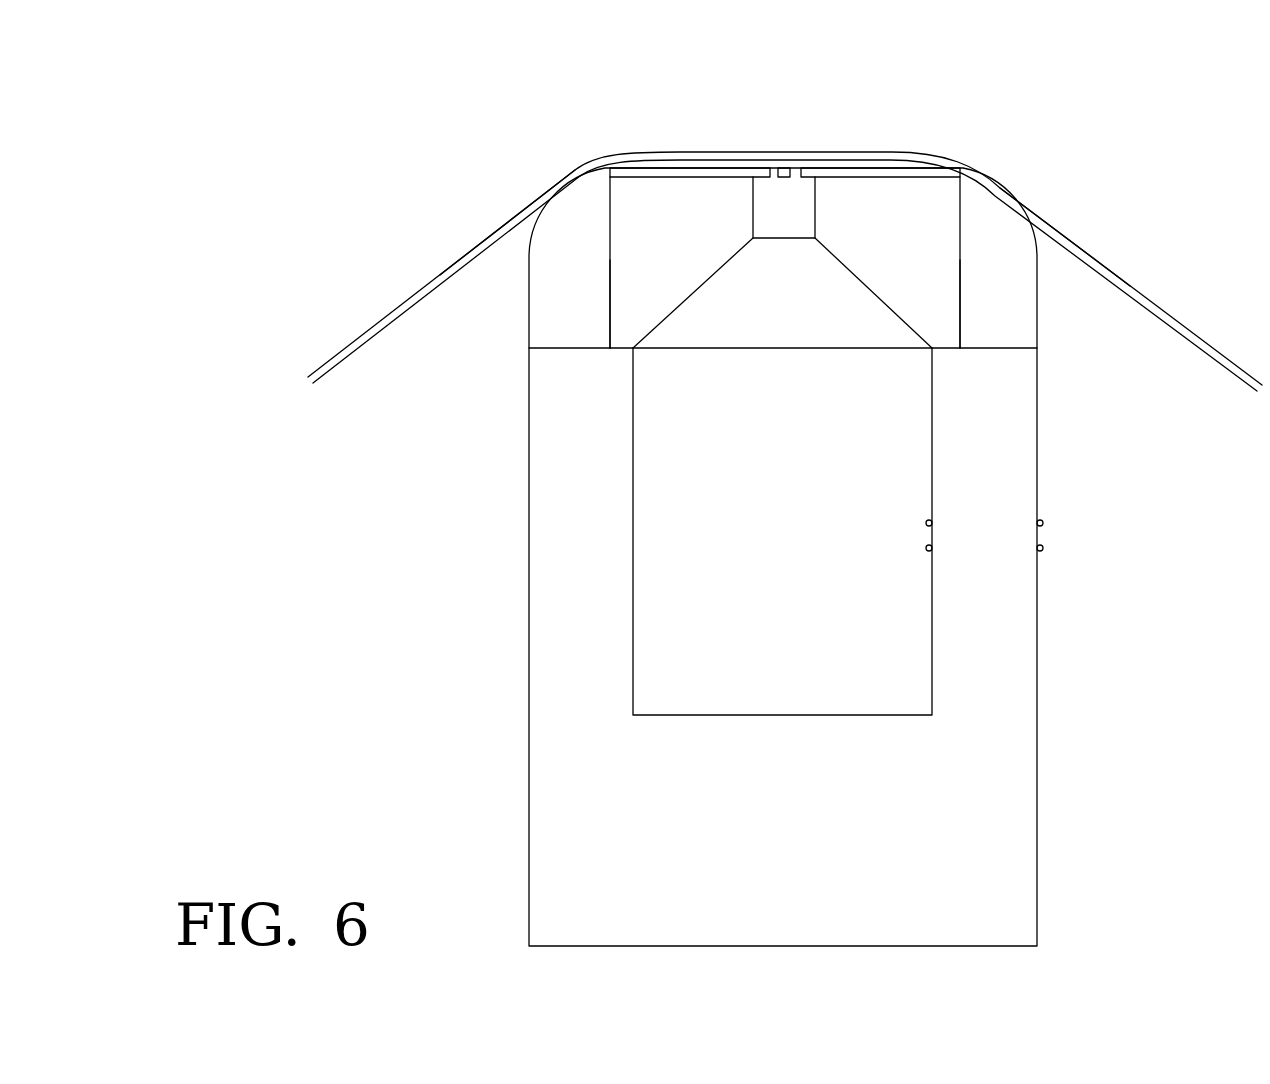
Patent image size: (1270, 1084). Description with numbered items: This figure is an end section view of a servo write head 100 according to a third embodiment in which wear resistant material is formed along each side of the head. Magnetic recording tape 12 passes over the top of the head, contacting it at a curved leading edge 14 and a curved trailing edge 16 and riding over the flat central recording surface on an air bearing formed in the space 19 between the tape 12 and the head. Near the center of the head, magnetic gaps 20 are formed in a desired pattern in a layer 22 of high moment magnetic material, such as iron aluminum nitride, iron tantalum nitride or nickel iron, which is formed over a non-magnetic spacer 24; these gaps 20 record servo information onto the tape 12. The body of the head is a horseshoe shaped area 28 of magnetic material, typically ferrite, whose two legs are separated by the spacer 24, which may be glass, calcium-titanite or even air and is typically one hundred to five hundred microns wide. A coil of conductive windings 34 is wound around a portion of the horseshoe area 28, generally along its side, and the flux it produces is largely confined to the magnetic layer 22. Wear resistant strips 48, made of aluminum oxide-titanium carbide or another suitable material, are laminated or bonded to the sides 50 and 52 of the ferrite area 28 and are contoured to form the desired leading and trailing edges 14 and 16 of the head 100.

The printhead body 100 is at (1068, 687).
The magnetic recording tape 12 is at (1165, 308).
The curved leading edge 14 is at (583, 172).
The curved trailing edge 16 is at (993, 178).
The space 19 is at (722, 168).
The magnetic gaps 20 is at (797, 167).
The layer of high moment magnetic material 22 is at (838, 178).
The non-magnetic spacer 24 is at (778, 239).
The horseshoe shaped area 28 is at (605, 395).
The coil of conductive windings 34 is at (1043, 523).
The wear resistant strips 48 is at (604, 244).
The side of ferrite area 50 is at (608, 300).
The side of ferrite area 52 is at (962, 298).